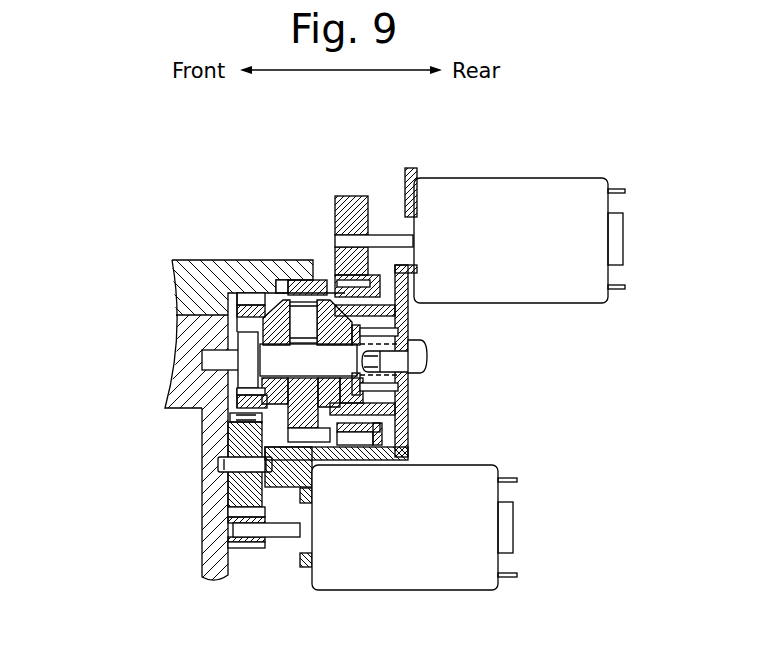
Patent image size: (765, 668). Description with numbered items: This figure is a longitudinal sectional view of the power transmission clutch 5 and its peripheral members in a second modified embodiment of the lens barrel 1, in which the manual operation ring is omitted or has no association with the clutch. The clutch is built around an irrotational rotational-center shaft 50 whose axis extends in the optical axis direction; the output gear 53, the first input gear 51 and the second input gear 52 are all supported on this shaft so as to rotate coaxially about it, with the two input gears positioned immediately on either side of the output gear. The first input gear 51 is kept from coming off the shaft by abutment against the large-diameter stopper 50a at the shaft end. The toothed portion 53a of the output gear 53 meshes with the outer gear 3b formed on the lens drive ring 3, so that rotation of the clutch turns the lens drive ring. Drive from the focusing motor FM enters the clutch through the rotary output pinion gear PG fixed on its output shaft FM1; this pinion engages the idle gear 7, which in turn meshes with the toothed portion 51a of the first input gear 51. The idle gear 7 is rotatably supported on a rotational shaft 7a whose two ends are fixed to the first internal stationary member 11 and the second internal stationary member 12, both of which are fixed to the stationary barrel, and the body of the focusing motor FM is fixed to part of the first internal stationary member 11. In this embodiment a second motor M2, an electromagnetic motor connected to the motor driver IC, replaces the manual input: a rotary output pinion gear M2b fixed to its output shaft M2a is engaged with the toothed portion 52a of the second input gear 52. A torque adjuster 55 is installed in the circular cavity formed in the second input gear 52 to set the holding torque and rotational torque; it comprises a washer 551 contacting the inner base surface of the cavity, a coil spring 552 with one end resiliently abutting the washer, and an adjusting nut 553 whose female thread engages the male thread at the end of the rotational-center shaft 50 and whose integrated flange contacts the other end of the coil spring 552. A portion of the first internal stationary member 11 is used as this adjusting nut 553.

The lens barrel 1 is at (140, 156).
The lens drive ring 3 is at (173, 278).
The outer gear 3b is at (305, 272).
The power transmission clutch 5 is at (236, 326).
The idle gear 7 is at (235, 493).
The rotational shaft 7a is at (218, 463).
The first internal stationary member 11 is at (408, 313).
The second internal stationary member 12 is at (205, 555).
The rotational-center shaft 50 is at (213, 360).
The large-diameter stopper 50a is at (243, 382).
The first input gear 51 is at (215, 445).
The toothed portion 51a is at (258, 418).
The second input gear 52 is at (381, 428).
The toothed portion 52a is at (370, 270).
The output gear 53 is at (313, 466).
The toothed portion 53a is at (297, 293).
The torque adjuster 55 is at (448, 365).
The washer 551 is at (361, 393).
The coil spring 552 is at (402, 333).
The adjusting nut 553 is at (405, 385).
The second motor M2 is at (583, 297).
The output shaft M2a is at (383, 237).
The rotary output pinion gear M2b is at (336, 236).
The focusing motor FM is at (465, 582).
The output shaft FM1 is at (282, 537).
The rotary output pinion gear PG is at (252, 548).